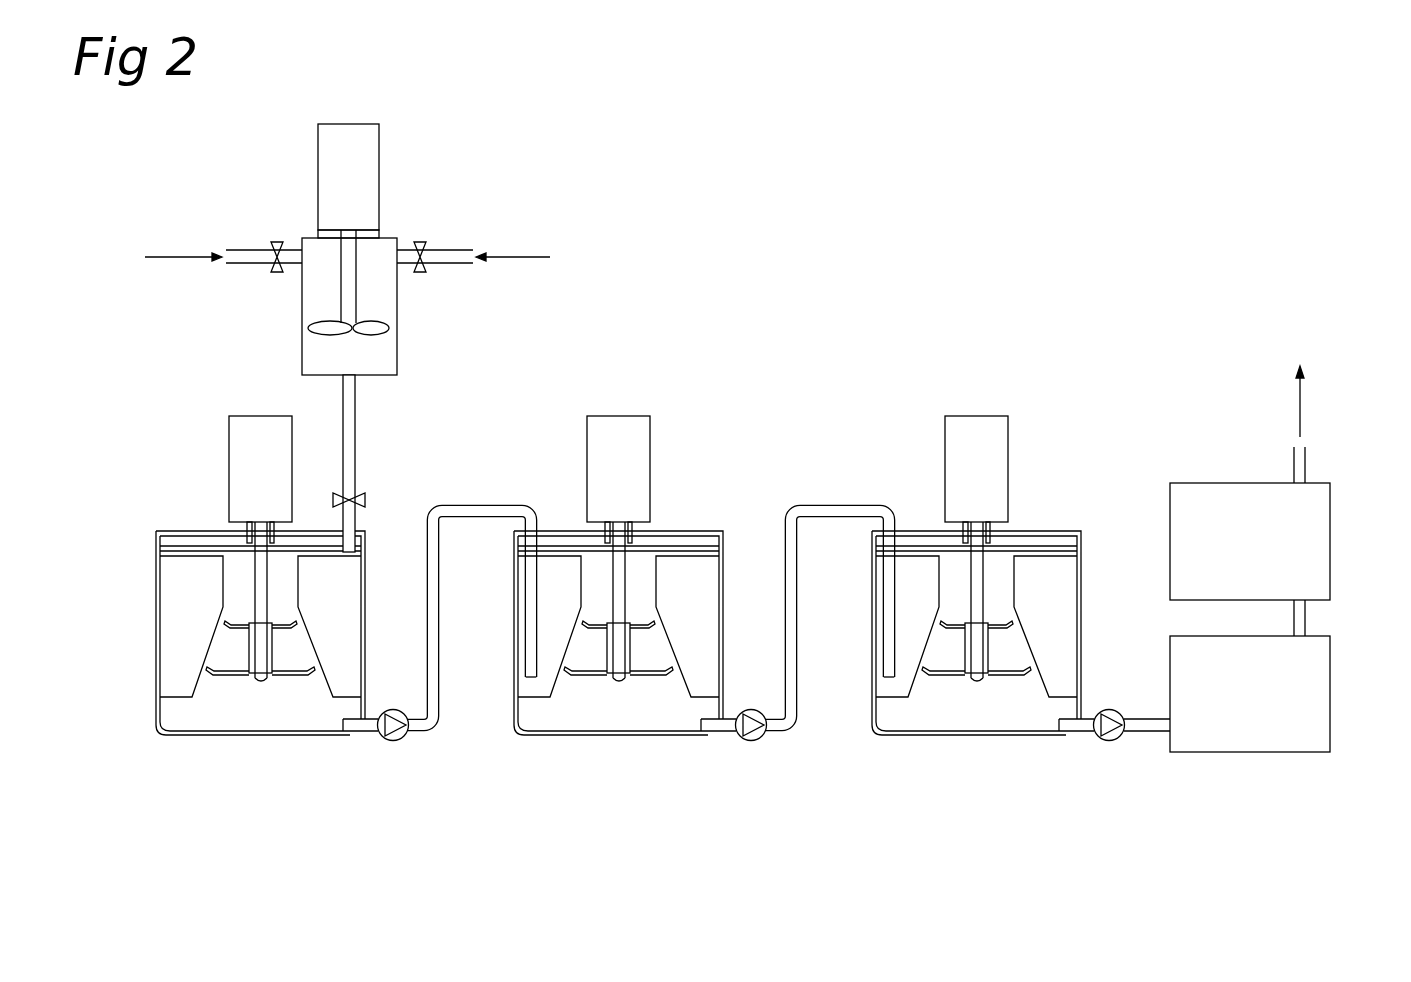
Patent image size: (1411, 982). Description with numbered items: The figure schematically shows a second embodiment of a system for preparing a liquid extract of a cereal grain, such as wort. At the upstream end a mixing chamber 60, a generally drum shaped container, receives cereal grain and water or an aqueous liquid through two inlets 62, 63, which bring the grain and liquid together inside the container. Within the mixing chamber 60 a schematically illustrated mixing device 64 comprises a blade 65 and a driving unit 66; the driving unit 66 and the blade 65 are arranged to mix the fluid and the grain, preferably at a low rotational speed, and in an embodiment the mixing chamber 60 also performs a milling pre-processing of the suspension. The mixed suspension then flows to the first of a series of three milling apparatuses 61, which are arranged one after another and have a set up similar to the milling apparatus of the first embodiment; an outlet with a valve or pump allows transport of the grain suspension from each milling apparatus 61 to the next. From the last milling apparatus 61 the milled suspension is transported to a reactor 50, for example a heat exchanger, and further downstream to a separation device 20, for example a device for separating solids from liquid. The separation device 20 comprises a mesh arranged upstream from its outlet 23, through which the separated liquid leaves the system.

The separation device 20 is at (1316, 555).
The outlet 23 is at (1297, 462).
The reactor 50 is at (1266, 725).
The mixing chamber 60 is at (347, 322).
The milling apparatus 61 is at (258, 743).
The inlet 62 is at (260, 258).
The inlet 63 is at (455, 257).
The mixing device 64 is at (338, 290).
The blade 65 is at (370, 350).
The driving unit 66 is at (370, 139).